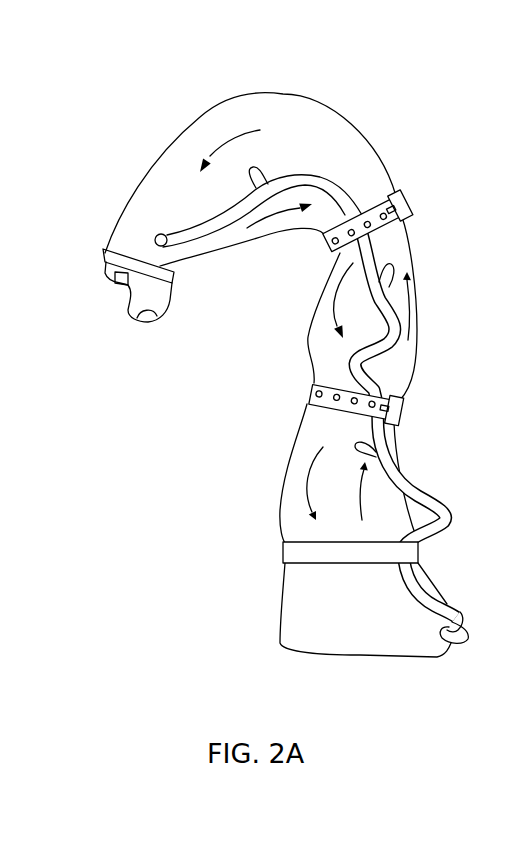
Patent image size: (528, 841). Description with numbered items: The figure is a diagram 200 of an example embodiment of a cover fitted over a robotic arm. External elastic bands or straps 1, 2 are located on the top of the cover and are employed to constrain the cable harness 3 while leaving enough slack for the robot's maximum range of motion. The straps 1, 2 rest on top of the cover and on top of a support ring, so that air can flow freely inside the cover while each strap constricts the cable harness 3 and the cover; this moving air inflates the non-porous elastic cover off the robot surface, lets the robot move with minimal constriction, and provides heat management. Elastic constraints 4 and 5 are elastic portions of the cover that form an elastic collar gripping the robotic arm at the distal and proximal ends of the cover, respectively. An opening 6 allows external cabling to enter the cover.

The diagram 200 is at (123, 56).
The strap 1 is at (411, 204).
The strap 2 is at (403, 420).
The cable harness 3 is at (372, 263).
The elastic constraint 4 is at (420, 554).
The elastic constraint 5 is at (105, 250).
The opening 6 is at (156, 235).